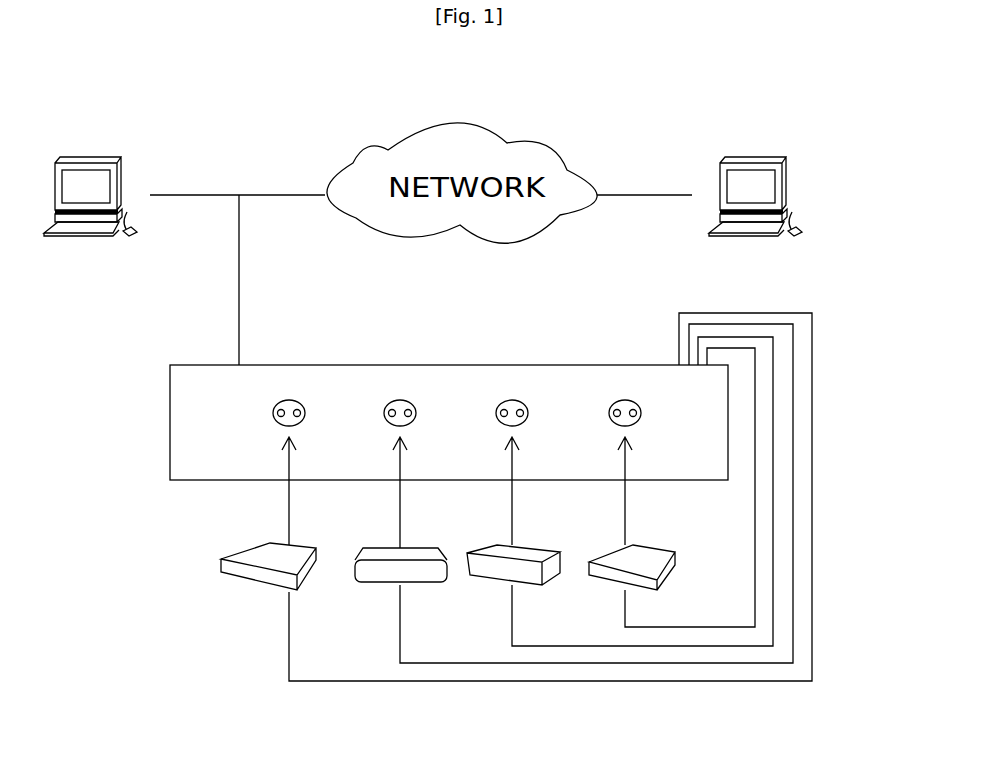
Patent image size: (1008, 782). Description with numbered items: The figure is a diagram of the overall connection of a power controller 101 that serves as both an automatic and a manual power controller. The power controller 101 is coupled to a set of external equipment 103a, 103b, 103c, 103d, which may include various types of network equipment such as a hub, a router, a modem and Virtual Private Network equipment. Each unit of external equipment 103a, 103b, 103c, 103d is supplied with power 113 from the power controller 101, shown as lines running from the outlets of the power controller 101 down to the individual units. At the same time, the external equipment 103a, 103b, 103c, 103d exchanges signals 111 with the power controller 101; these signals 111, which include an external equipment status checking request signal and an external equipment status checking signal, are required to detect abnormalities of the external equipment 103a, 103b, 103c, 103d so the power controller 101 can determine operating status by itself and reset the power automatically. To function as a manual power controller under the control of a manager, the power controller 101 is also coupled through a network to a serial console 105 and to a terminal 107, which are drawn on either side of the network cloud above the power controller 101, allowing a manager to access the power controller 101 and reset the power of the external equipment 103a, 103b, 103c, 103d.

The power controller 101 is at (287, 365).
The external equipment 103a is at (245, 577).
The external equipment 103b is at (383, 581).
The external equipment 103c is at (493, 578).
The external equipment 103d is at (615, 578).
The serial console 105 is at (93, 157).
The terminal 107 is at (757, 157).
The signals 111 is at (600, 682).
The power 113 is at (288, 493).